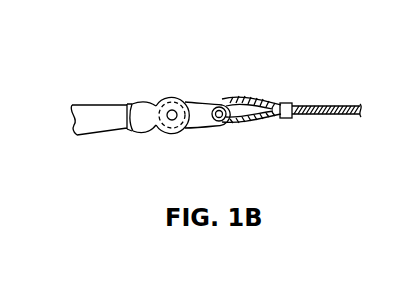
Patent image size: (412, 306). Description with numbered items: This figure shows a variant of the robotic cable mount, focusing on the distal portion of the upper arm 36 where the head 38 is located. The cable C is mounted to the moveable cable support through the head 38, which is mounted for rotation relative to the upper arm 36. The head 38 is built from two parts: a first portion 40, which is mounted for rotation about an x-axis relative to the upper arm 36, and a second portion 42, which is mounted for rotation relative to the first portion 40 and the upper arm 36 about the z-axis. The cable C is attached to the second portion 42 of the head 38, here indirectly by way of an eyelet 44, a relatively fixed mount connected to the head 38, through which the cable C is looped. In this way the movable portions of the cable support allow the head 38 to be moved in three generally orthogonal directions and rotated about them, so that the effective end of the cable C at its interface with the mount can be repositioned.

The upper arm 36 is at (86, 148).
The head 38 is at (180, 104).
The first portion 40 is at (148, 126).
The second portion 42 is at (182, 132).
The eyelet 44 is at (209, 121).
The cable C is at (318, 100).